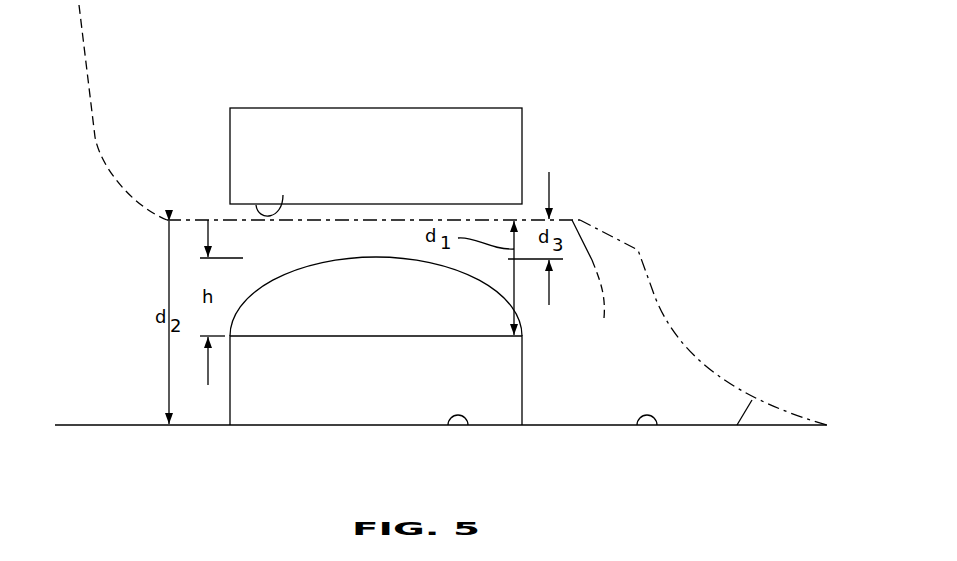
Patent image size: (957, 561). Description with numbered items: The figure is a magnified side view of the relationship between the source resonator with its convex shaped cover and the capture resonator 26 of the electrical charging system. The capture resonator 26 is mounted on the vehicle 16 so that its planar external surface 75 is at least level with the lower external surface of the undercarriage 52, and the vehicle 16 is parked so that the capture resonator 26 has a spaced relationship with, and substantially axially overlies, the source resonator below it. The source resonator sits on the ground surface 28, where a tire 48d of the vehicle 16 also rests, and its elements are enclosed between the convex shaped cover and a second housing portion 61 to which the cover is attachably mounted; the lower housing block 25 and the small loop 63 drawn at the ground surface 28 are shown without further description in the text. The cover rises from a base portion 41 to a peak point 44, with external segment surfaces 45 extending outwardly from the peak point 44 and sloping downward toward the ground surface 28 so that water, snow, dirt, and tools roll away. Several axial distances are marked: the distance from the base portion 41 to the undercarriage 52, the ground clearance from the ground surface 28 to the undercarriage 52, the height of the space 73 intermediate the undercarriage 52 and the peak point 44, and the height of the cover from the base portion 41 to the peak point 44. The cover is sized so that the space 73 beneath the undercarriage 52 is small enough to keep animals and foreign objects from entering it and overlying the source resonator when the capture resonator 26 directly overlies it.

The vehicle 16 is at (95, 137).
The capture resonator 26 is at (497, 107).
The planar external surface 75 is at (283, 195).
The space 73 is at (345, 245).
The peak point 44 is at (381, 257).
The base block 25 is at (352, 412).
The external segment surfaces 45 is at (298, 336).
The second housing portion 61 is at (305, 417).
The base portion 41 is at (485, 336).
The fastening loop 63 is at (468, 425).
The ground surface 28 is at (657, 425).
The undercarriage 52 is at (593, 283).
The tire 48d is at (737, 425).